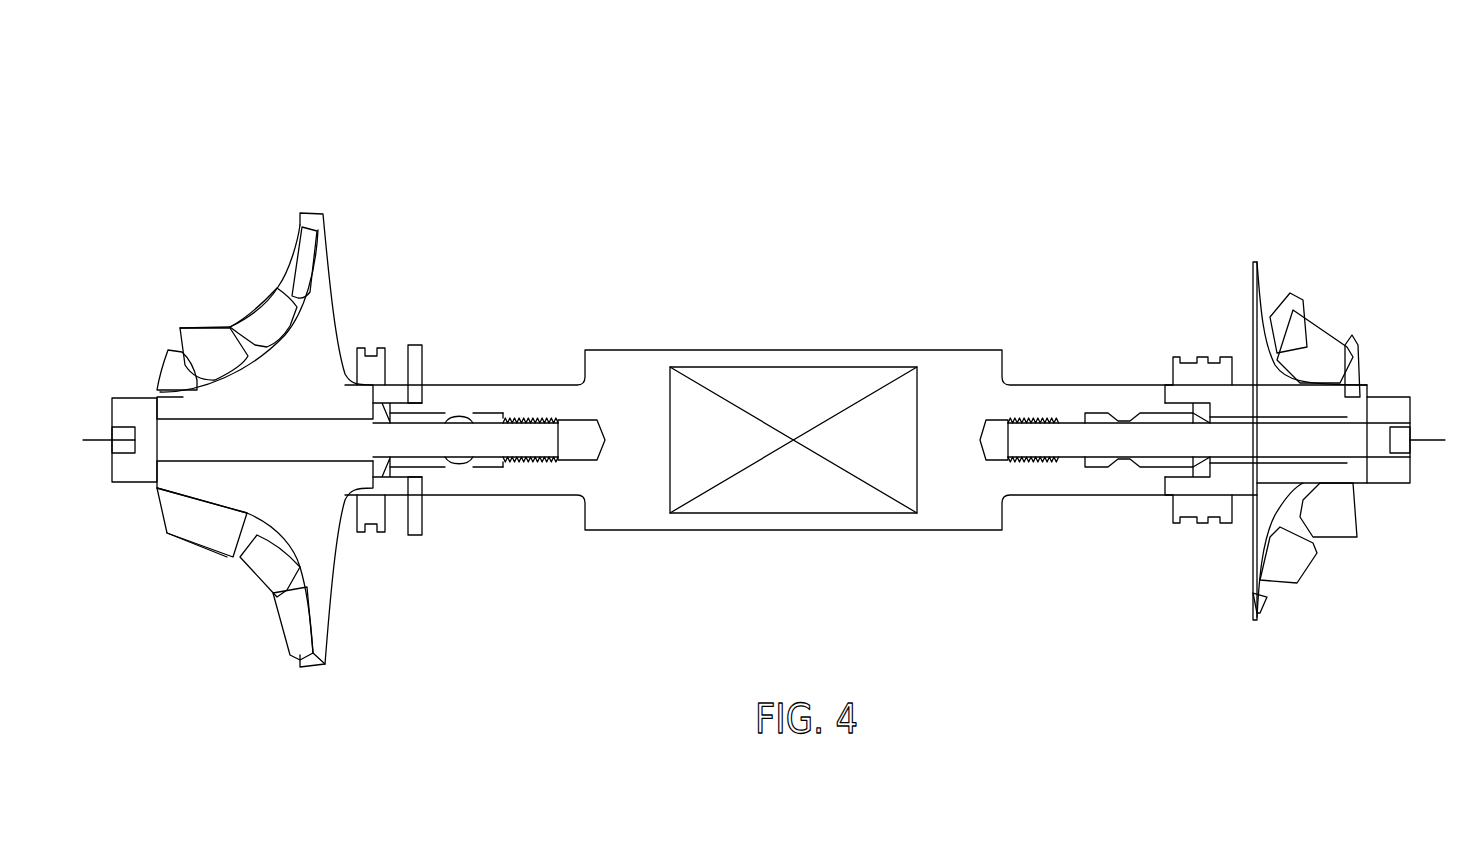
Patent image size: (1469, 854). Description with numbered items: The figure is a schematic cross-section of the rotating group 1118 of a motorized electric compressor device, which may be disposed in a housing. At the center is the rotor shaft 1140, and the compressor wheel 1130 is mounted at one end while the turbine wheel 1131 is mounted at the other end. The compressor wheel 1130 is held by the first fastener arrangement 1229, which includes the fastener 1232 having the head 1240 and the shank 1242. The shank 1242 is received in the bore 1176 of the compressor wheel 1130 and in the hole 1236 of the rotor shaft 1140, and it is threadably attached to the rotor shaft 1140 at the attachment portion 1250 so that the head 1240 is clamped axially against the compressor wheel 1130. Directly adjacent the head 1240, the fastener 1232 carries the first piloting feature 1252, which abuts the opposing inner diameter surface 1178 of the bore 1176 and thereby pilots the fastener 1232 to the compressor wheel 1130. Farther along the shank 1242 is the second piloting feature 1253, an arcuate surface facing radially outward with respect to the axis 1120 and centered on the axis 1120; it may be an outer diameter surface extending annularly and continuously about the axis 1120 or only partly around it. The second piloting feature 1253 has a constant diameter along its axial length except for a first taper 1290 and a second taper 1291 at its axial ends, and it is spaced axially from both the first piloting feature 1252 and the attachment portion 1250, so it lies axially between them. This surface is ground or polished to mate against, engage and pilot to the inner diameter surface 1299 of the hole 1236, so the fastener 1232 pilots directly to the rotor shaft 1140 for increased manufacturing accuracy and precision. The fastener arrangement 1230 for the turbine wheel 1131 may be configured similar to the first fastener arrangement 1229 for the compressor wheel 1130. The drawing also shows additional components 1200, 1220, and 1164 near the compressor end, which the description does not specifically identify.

The rotating group 1118 is at (242, 155).
The compressor wheel 1130 is at (268, 373).
The turbine wheel 1131 is at (1284, 378).
The fastener arrangement 1230 is at (1387, 380).
The first fastener arrangement 1229 is at (86, 406).
The head 1240 is at (127, 412).
The axis 1120 is at (107, 438).
The inner diameter surface 1178 is at (172, 418).
The flange 1200 is at (378, 358).
The seal plate 1220 is at (405, 356).
The hole 1236 is at (438, 413).
The inner diameter surface 1299 is at (478, 410).
The attachment portion 1250 is at (503, 420).
The rotor shaft 1140 is at (618, 365).
The shank 1242 is at (300, 443).
The bore 1176 is at (272, 458).
The first piloting feature 1252 is at (167, 458).
The fastener 1232 is at (118, 492).
The seal plate 1164 is at (405, 490).
The second taper 1291 is at (445, 458).
The second piloting feature 1253 is at (465, 462).
The first taper 1290 is at (470, 460).